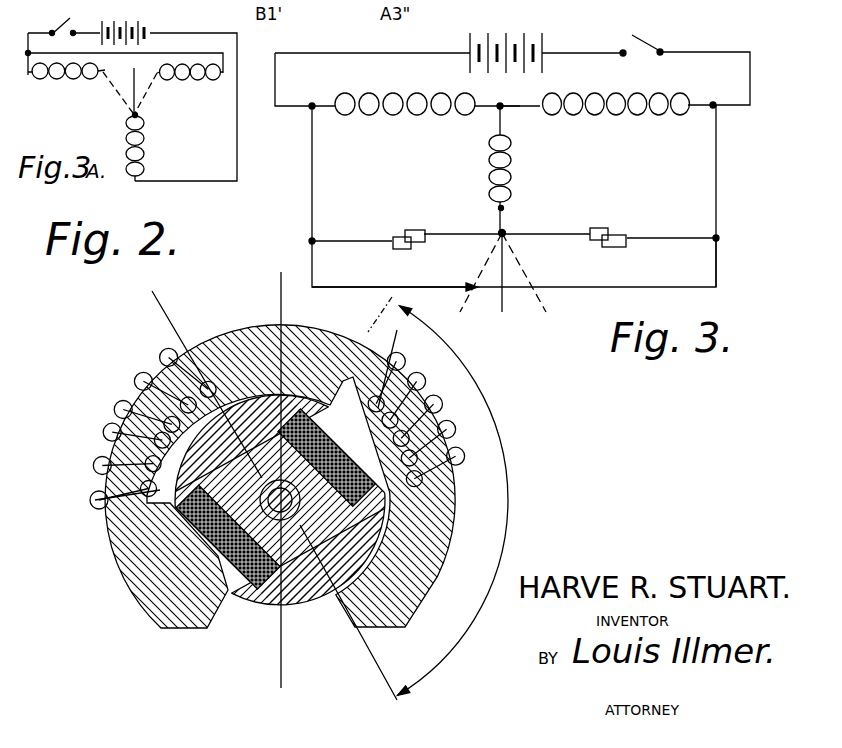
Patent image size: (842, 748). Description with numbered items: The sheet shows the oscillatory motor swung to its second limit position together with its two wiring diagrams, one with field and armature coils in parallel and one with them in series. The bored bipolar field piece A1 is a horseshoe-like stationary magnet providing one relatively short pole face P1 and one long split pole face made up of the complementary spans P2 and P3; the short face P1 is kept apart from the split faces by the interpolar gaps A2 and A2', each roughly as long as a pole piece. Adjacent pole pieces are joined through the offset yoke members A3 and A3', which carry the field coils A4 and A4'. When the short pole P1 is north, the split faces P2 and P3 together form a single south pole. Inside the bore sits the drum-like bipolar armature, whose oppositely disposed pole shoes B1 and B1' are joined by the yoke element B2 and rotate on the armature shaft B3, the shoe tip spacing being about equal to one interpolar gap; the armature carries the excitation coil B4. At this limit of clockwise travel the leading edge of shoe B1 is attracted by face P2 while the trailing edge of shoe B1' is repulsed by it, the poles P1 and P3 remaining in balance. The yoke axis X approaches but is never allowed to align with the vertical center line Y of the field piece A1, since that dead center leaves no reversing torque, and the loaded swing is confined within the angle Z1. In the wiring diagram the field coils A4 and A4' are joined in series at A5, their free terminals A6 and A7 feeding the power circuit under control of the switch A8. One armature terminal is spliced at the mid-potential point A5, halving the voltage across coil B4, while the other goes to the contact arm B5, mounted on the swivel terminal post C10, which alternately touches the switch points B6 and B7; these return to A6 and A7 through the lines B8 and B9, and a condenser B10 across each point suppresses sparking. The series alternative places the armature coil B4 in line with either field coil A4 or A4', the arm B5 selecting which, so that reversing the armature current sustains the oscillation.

In FIG. 2, the bipolar field piece A1 is at (253, 333).
In FIG. 2, the interpolar gap A2 is at (116, 466).
In FIG. 2, the interpolar gap A2' is at (443, 416).
In FIG. 2, the offset yoke member A3 is at (162, 377).
In FIG. 2, the offset yoke member A3' is at (496, 454).
In FIG. 2, the field coil A4 is at (114, 437).
In FIG. 3, the field coil A4 is at (405, 128).
In FIG. 3A, the field coil A4 is at (61, 84).
In FIG. 2, the field coil A4' is at (466, 373).
In FIG. 3, the field coil A4' is at (616, 131).
In FIG. 3A, the field coil A4' is at (203, 83).
In FIG. 3, the series interconnection point A5 is at (524, 104).
In FIG. 3, the free field coil terminal A6 is at (310, 107).
In FIG. 3, the free field coil terminal A7 is at (717, 106).
In FIG. 3, the switch A8 is at (648, 45).
In FIG. 3A, the switch A8 is at (52, 33).
In FIG. 2, the armature pole shoe B1 is at (280, 500).
In FIG. 2, the armature pole shoe B1' is at (188, 414).
In FIG. 2, the yoke element B2 is at (358, 480).
In FIG. 2, the armature shaft B3 is at (215, 540).
In FIG. 2, the excitation coil B4 is at (212, 578).
In FIG. 3, the excitation coil B4 is at (512, 188).
In FIG. 3A, the excitation coil B4 is at (145, 139).
In FIG. 3, the contact arm B5 is at (528, 280).
In FIG. 3A, the contact arm B5 is at (142, 95).
In FIG. 3, the switch point B6 is at (472, 285).
In FIG. 3A, the switch point B6 is at (105, 92).
In FIG. 3, the switch point B7 is at (540, 298).
In FIG. 3A, the switch point B7 is at (166, 93).
In FIG. 3, the line B8 is at (352, 276).
In FIG. 3, the line B9 is at (720, 268).
In FIG. 3, the condenser B10 is at (412, 232).
In FIG. 3, the swivel terminal post C10 is at (500, 232).
In FIG. 3A, the swivel terminal post C10 is at (128, 116).
In FIG. 2, the short field pole face P1 is at (332, 348).
In FIG. 2, the split pole face span P2 is at (182, 552).
In FIG. 2, the split pole face span P3 is at (386, 547).
In FIG. 2, the restricted swing angle Z1 is at (454, 501).
In FIG. 2, the armature yoke axis X is at (271, 498).
In FIG. 3A, the armature yoke axis X is at (174, 15).
In FIG. 2, the vertical center line of field magnet Y is at (279, 481).
In FIG. 3A, the vertical center line of field magnet Y is at (318, 2).